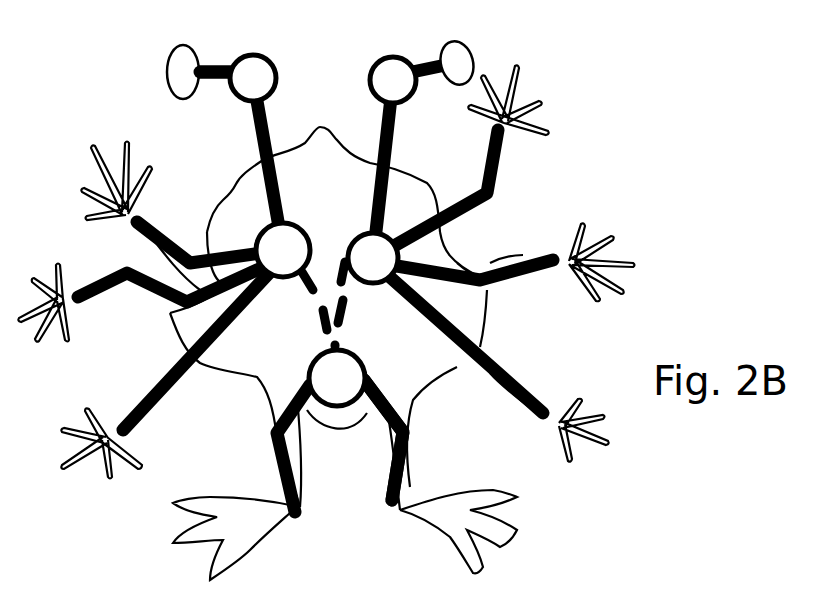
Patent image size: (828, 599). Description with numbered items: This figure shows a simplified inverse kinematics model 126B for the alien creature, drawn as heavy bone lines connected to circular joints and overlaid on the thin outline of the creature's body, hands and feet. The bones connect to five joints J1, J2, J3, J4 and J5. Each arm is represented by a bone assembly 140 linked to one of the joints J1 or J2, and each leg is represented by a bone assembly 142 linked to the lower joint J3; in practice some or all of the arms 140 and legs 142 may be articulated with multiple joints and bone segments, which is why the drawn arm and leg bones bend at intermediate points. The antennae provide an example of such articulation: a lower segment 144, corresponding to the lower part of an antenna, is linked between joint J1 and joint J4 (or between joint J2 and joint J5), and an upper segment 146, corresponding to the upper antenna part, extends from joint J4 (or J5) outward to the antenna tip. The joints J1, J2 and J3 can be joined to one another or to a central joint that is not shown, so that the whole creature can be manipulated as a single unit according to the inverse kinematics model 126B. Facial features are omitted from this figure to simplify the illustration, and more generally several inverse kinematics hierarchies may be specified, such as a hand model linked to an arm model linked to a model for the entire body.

The inverse kinematics model for alien creature 126B is at (647, 80).
The arm bone assembly 140 is at (150, 297).
The leg bone assembly 142 is at (387, 503).
The lower antenna segment 144 is at (270, 113).
The upper antenna segment 146 is at (218, 53).
The joint J1 is at (283, 250).
The joint J2 is at (373, 258).
The joint J3 is at (337, 378).
The joint J4 is at (253, 78).
The joint J5 is at (393, 80).